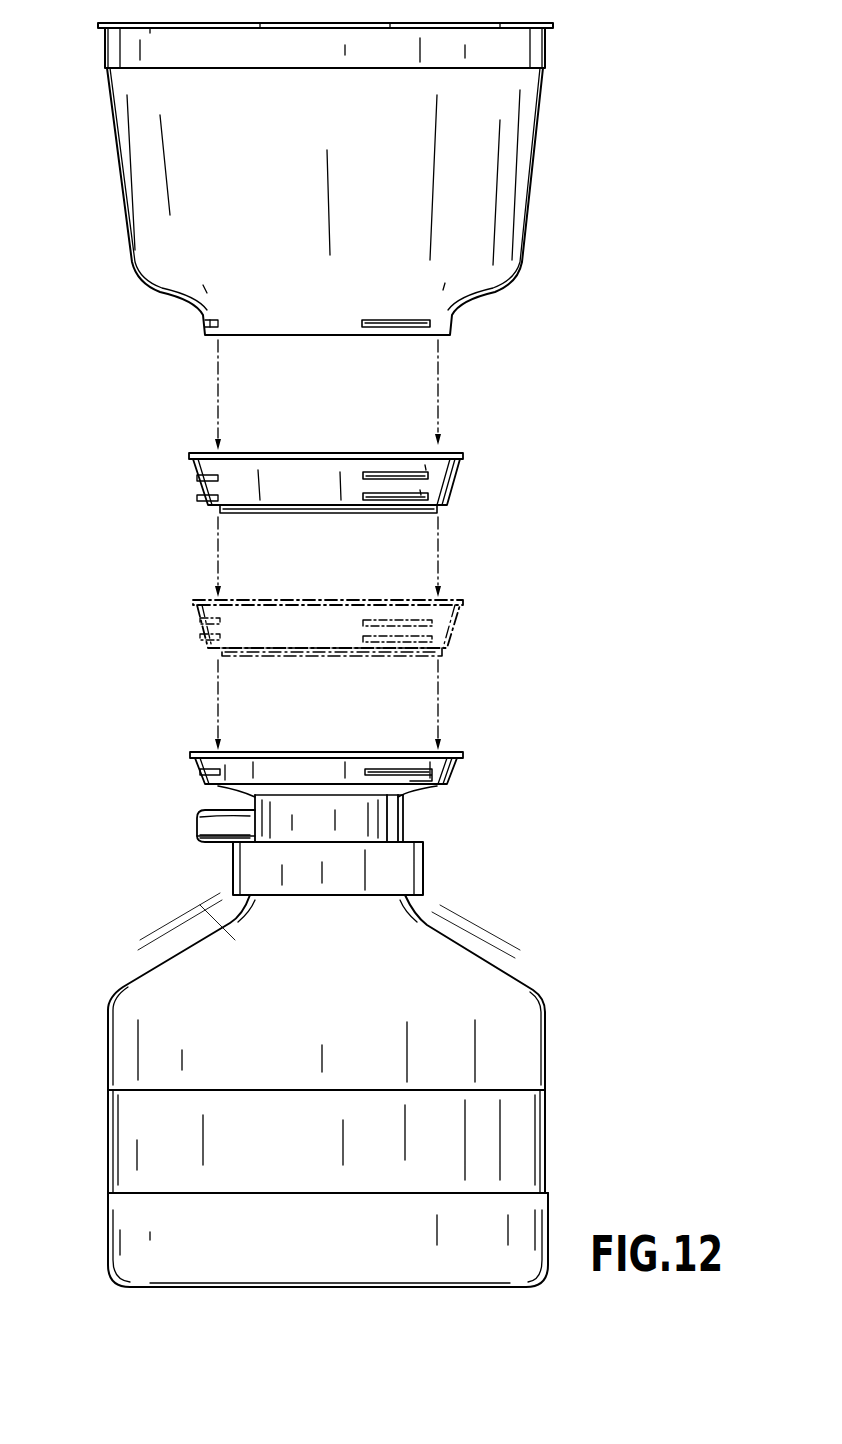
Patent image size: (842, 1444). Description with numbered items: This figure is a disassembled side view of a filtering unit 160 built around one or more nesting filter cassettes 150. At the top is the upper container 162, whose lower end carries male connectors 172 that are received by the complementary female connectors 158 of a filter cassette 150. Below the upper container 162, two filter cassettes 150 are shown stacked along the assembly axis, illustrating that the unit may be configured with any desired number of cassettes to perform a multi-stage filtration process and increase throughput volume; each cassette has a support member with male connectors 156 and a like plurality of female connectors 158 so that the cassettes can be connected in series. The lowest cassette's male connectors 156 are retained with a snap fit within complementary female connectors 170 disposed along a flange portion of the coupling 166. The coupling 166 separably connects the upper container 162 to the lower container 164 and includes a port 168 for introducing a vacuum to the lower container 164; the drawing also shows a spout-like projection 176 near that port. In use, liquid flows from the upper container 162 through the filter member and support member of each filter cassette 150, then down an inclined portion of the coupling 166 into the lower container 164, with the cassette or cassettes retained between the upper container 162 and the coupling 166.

The filter cassette 150 is at (186, 476).
The male connectors 156 is at (196, 502).
The female connectors 158 is at (207, 459).
The filtering unit 160 is at (617, 108).
The upper container 162 is at (274, 168).
The lower container 164 is at (246, 1050).
The coupling 166 is at (425, 865).
The port 168 is at (203, 843).
The female connectors 170 is at (196, 781).
The male connectors 172 is at (395, 320).
The spout 176 is at (222, 786).